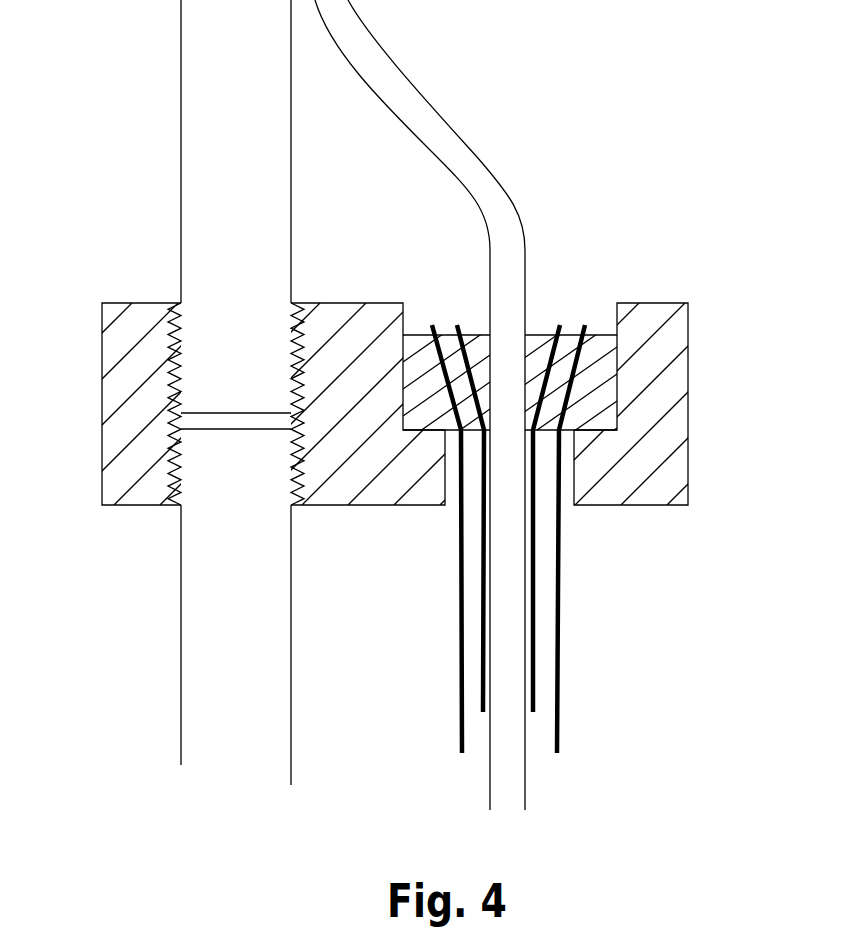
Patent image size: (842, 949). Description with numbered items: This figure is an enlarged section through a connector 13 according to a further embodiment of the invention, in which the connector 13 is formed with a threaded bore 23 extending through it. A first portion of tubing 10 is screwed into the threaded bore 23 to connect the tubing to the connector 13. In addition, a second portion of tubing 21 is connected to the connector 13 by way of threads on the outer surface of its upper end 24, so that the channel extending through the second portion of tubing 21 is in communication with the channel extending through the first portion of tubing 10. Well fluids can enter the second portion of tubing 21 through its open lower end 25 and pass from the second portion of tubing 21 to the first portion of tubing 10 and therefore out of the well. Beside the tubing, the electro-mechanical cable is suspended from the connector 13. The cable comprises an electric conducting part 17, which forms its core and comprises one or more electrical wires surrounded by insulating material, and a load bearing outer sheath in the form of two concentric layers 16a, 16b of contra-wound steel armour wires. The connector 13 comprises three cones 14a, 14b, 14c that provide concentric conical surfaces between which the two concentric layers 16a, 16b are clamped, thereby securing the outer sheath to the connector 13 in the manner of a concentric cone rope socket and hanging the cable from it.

The portion of tubing 10 is at (233, 42).
The connector 13 is at (135, 477).
The cone 14a is at (597, 387).
The cone 14b is at (562, 368).
The cone 14c is at (540, 358).
The layer of contra-wound steel armour wires 16a is at (462, 635).
The layer of contra-wound steel armour wires 16b is at (483, 661).
The electric conducting part 17 is at (418, 112).
The second portion of tubing 21 is at (240, 640).
The threaded bore 23 is at (173, 403).
The upper end 24 is at (238, 472).
The open lower end 25 is at (239, 752).